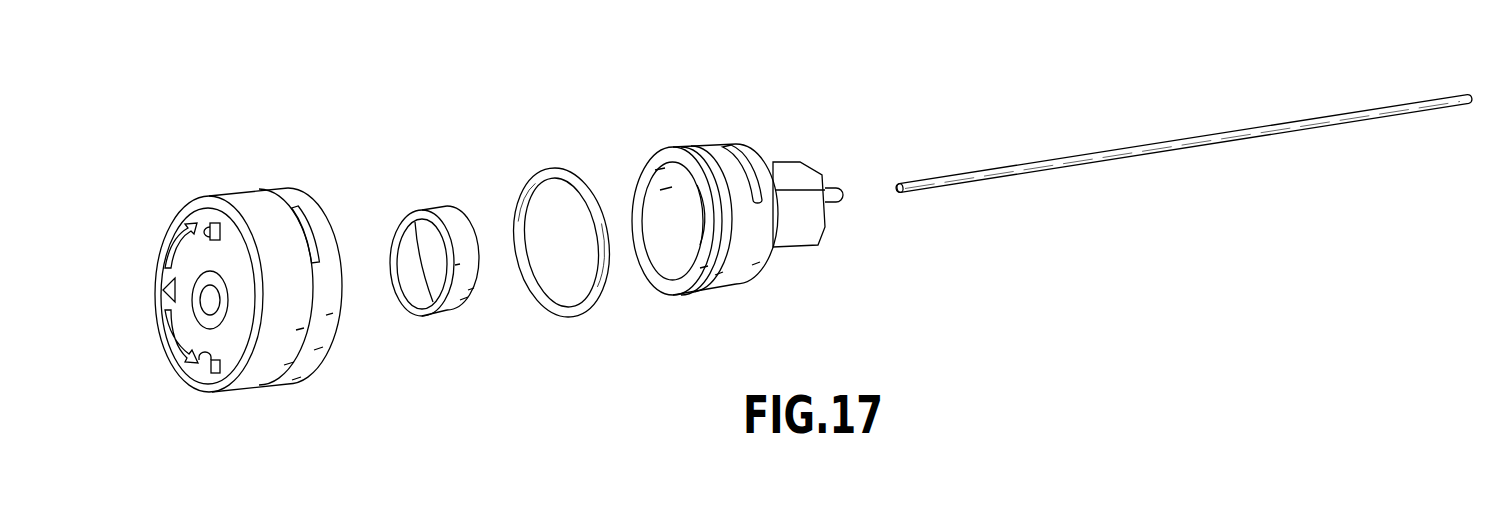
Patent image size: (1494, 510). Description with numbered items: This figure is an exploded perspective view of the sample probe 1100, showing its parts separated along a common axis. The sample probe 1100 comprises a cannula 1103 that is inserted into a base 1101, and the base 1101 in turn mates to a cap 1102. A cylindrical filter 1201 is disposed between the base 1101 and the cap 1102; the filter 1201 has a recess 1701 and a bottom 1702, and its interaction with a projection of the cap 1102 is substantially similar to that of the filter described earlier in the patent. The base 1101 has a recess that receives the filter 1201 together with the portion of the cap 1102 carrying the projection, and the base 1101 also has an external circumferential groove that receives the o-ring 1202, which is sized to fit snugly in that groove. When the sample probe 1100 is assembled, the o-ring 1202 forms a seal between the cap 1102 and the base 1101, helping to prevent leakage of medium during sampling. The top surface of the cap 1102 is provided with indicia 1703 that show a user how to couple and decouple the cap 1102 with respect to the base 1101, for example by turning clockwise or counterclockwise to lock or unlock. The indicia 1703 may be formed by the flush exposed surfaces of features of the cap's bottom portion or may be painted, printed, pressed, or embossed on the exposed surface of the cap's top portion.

The sample probe 1100 is at (861, 53).
The base 1101 is at (688, 130).
The cap 1102 is at (225, 182).
The cannula 1103 is at (1082, 156).
The cylindrical filter 1201 is at (438, 214).
The o-ring 1202 is at (551, 172).
The recess 1701 is at (418, 270).
The bottom 1702 is at (430, 242).
The indicia 1703 is at (185, 380).